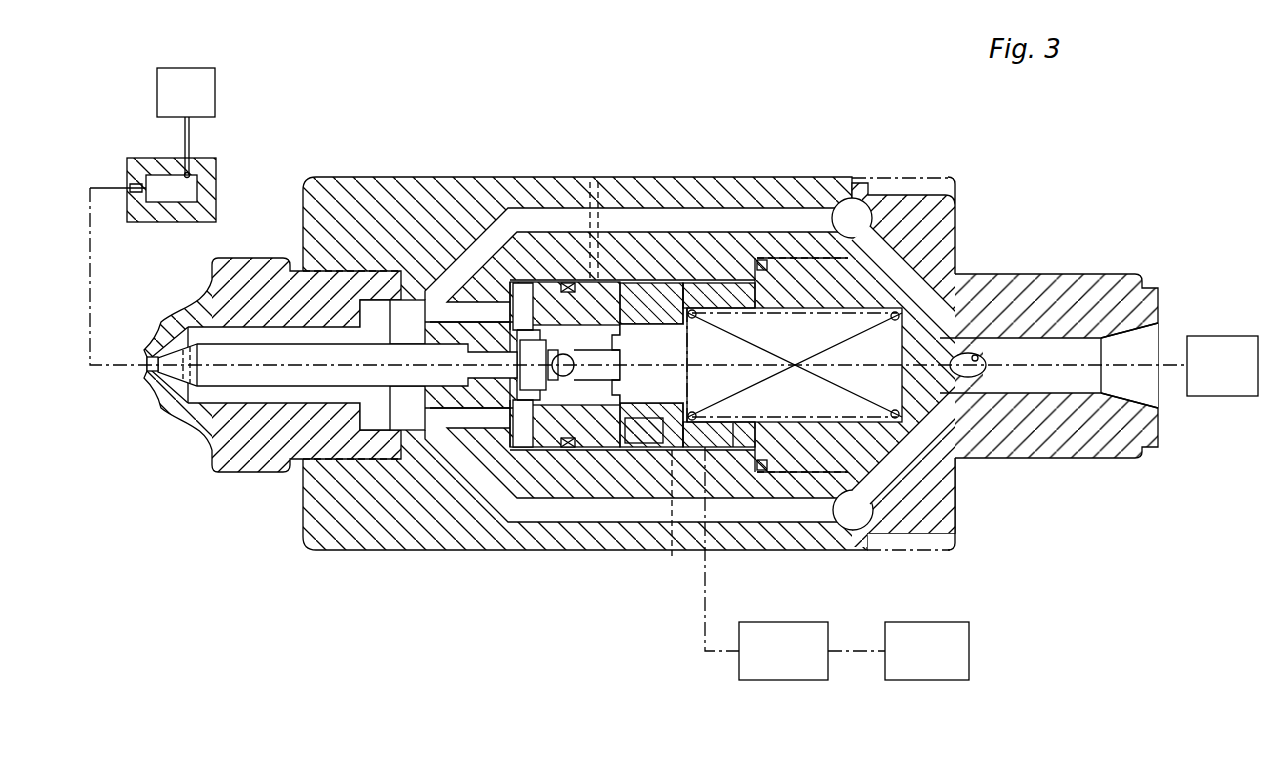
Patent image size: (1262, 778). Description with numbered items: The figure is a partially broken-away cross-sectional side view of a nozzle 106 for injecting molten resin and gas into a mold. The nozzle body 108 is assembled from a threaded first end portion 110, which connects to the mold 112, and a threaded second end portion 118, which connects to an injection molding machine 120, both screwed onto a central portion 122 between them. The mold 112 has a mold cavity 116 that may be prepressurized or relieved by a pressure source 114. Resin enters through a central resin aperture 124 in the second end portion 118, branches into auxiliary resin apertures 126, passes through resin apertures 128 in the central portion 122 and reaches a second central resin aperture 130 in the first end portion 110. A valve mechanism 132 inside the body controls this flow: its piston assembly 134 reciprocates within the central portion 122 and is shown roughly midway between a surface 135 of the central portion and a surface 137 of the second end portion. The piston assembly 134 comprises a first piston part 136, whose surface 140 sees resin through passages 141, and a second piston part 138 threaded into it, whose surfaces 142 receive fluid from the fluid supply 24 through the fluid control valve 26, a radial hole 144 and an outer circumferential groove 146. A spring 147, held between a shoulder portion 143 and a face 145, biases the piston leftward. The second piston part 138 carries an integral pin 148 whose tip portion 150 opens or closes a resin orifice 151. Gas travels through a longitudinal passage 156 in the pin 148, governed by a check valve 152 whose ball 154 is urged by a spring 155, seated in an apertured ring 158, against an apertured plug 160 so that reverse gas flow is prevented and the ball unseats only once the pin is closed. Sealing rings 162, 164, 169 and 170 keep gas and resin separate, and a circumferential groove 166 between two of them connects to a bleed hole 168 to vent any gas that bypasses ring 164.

The fluid supply 24 is at (970, 622).
The fluid control valve 26 is at (828, 622).
The nozzle 106 is at (692, 123).
The nozzle body 108 is at (838, 190).
The first end portion 110 is at (241, 256).
The mold 112 is at (218, 181).
The pressure source 114 is at (216, 78).
The mold cavity 116 is at (192, 162).
The second end portion 118 is at (1046, 462).
The injection molding machine 120 is at (1208, 336).
The central portion 122 is at (795, 205).
The central resin aperture 124 is at (1162, 323).
The auxiliary resin apertures 126 is at (945, 310).
The resin apertures 128 is at (762, 260).
The second central resin aperture 130 is at (232, 398).
The valve mechanism 132 is at (520, 300).
The piston assembly 134 is at (648, 292).
The surface 135 is at (457, 300).
The first piston part 136 is at (618, 290).
The surface 137 is at (757, 312).
The second piston part 138 is at (735, 310).
The surface 140 is at (515, 290).
The passages 141 is at (440, 300).
The surfaces 142 is at (772, 262).
The shoulder portion 143 is at (707, 558).
The hole 144 is at (671, 562).
The face 145 is at (900, 470).
The outer circumferential groove 146 is at (722, 468).
The spring 147 is at (925, 250).
The pin 148 is at (268, 410).
The tip portion 150 is at (178, 395).
The resin orifice 151 is at (145, 372).
The check valve 152 is at (528, 400).
The ball 154 is at (556, 405).
The spring 155 is at (535, 385).
The passage 156 is at (466, 420).
The apertured ring 158 is at (560, 398).
The apertured plug 160 is at (575, 378).
The sealing ring 162 is at (556, 284).
The sealing ring 164 is at (690, 292).
The circumferential groove 166 is at (578, 282).
The bleed hole 168 is at (592, 182).
The sealing ring 169 is at (645, 418).
The sealing ring 170 is at (858, 200).